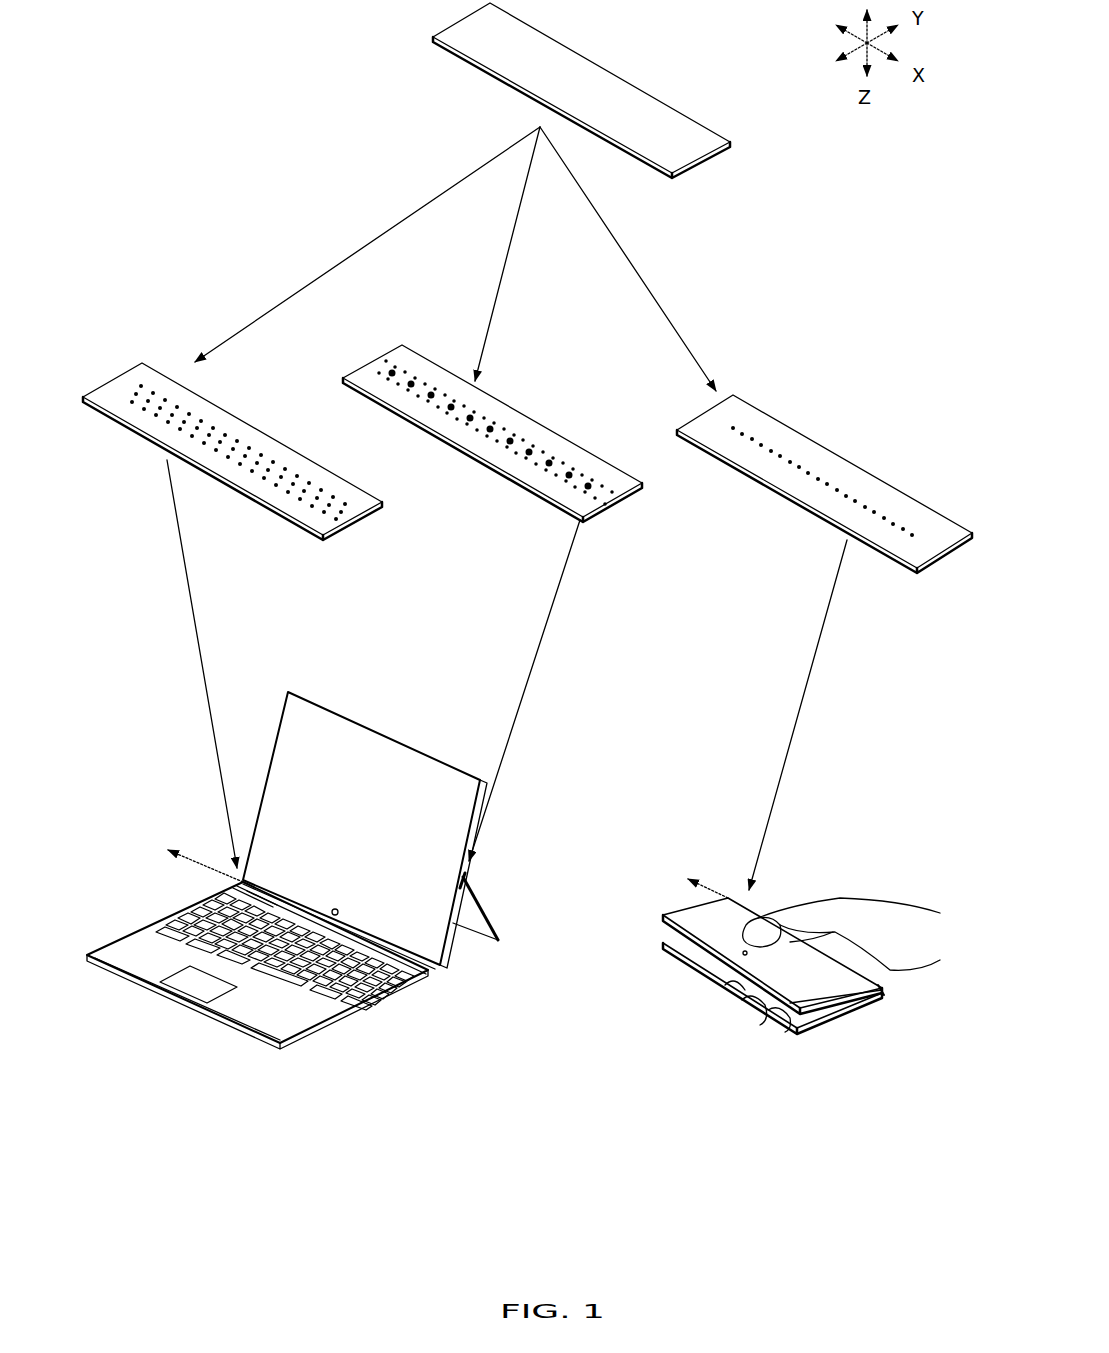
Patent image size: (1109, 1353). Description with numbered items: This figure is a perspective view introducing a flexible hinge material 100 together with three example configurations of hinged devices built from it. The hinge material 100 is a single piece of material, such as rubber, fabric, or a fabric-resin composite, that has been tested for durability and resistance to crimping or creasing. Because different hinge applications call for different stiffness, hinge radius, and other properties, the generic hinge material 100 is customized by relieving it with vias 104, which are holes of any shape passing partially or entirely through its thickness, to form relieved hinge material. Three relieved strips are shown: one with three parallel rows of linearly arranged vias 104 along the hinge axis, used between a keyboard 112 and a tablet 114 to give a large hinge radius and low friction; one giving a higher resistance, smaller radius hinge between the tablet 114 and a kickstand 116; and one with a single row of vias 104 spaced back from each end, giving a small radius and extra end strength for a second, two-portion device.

The flexible hinge material 100 is at (452, 54).
The vias 104 is at (346, 512).
The keyboard 112 is at (285, 1006).
The tablet 114 is at (385, 695).
The kickstand 116 is at (462, 932).